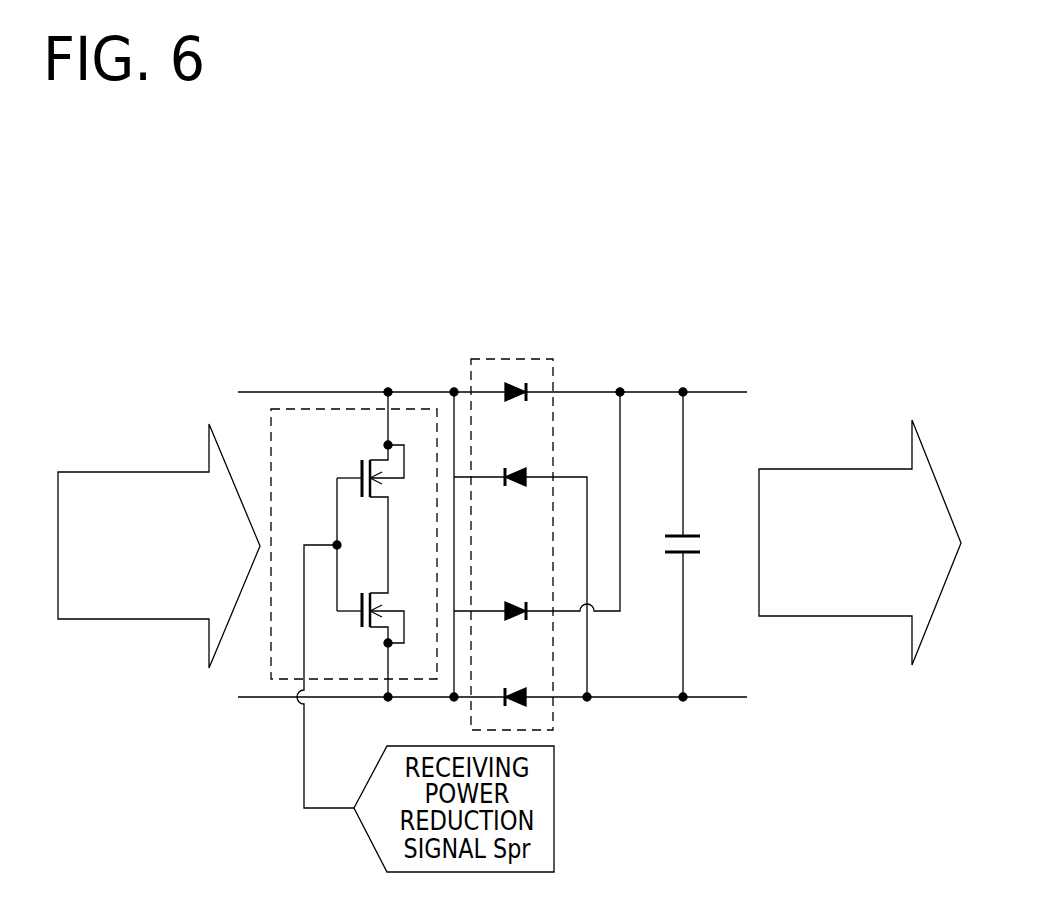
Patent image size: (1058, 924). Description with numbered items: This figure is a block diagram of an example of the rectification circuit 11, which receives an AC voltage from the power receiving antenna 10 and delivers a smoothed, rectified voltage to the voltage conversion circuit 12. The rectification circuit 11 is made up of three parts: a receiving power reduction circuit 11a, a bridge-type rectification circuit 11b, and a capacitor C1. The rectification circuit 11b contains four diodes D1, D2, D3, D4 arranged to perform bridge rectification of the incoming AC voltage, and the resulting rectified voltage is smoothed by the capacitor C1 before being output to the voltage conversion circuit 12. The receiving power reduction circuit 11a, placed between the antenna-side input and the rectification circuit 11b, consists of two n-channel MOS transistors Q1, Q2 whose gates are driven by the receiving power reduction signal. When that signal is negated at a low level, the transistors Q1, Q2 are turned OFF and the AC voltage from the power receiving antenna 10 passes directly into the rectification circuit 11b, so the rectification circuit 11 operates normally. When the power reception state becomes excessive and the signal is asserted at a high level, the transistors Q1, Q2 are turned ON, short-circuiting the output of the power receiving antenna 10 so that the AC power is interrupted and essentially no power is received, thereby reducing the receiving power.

The power receiving antenna 10 is at (159, 546).
The rectification circuit 11 is at (754, 211).
The receiving power reduction circuit 11a is at (306, 409).
The rectification circuit 11b is at (505, 359).
The voltage conversion circuit 12 is at (860, 542).
The nMOS transistor Q1 is at (357, 468).
The nMOS transistor Q2 is at (404, 611).
The diode D1 is at (518, 403).
The diode D2 is at (515, 488).
The diode D3 is at (516, 602).
The diode D4 is at (516, 689).
The capacitor C1 is at (684, 528).